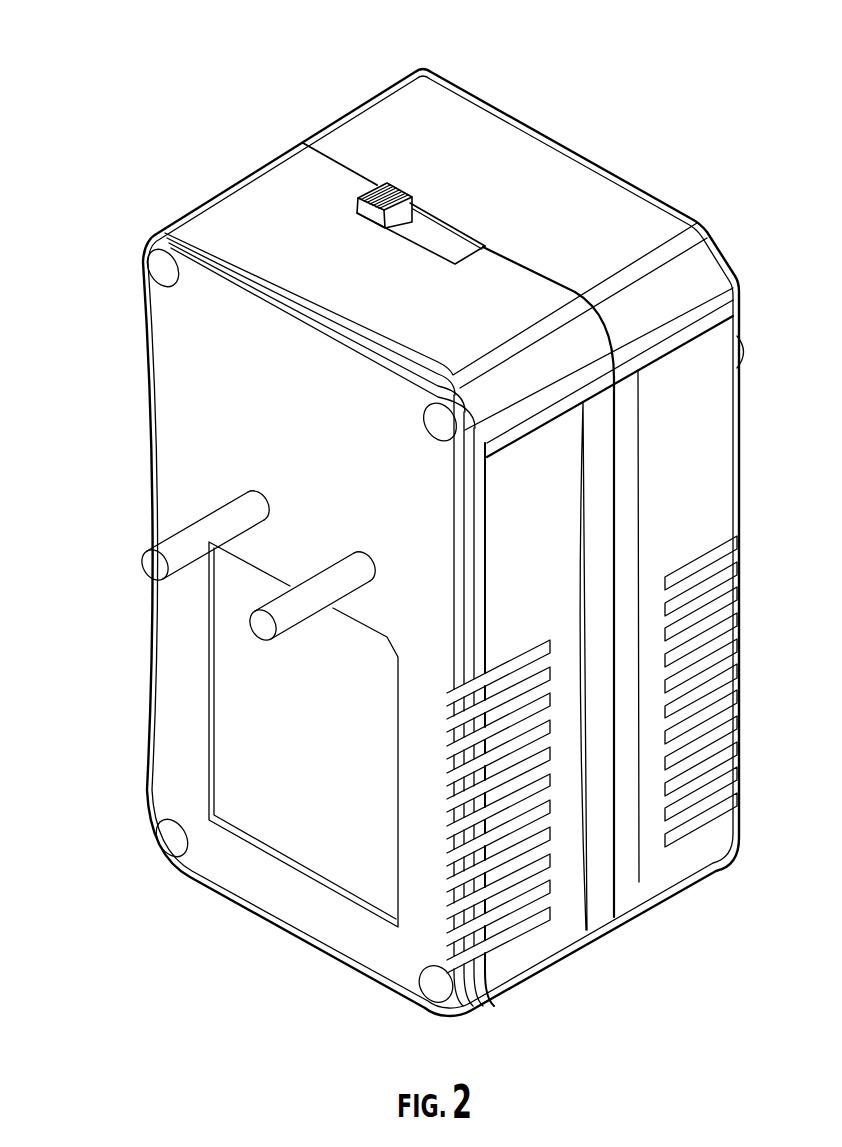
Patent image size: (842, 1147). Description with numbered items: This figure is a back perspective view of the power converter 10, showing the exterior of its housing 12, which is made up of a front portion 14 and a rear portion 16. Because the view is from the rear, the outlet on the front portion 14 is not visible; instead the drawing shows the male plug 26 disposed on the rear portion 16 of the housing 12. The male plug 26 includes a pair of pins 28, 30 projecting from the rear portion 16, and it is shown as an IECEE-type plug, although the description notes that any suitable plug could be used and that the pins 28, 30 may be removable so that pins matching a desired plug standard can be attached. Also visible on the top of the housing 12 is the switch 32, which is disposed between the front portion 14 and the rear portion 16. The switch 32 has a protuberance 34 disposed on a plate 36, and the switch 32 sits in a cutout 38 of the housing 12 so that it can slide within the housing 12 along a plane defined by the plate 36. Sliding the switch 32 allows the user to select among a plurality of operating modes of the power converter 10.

The power converter 10 is at (665, 47).
The housing 12 is at (505, 113).
The front portion 14 is at (710, 463).
The rear portion 16 is at (185, 388).
The male plug 26 is at (203, 612).
The pin 28 is at (152, 565).
The pin 30 is at (261, 625).
The switch 32 is at (373, 182).
The protuberance 34 is at (405, 192).
The plate 36 is at (427, 245).
The cutout 38 is at (467, 243).